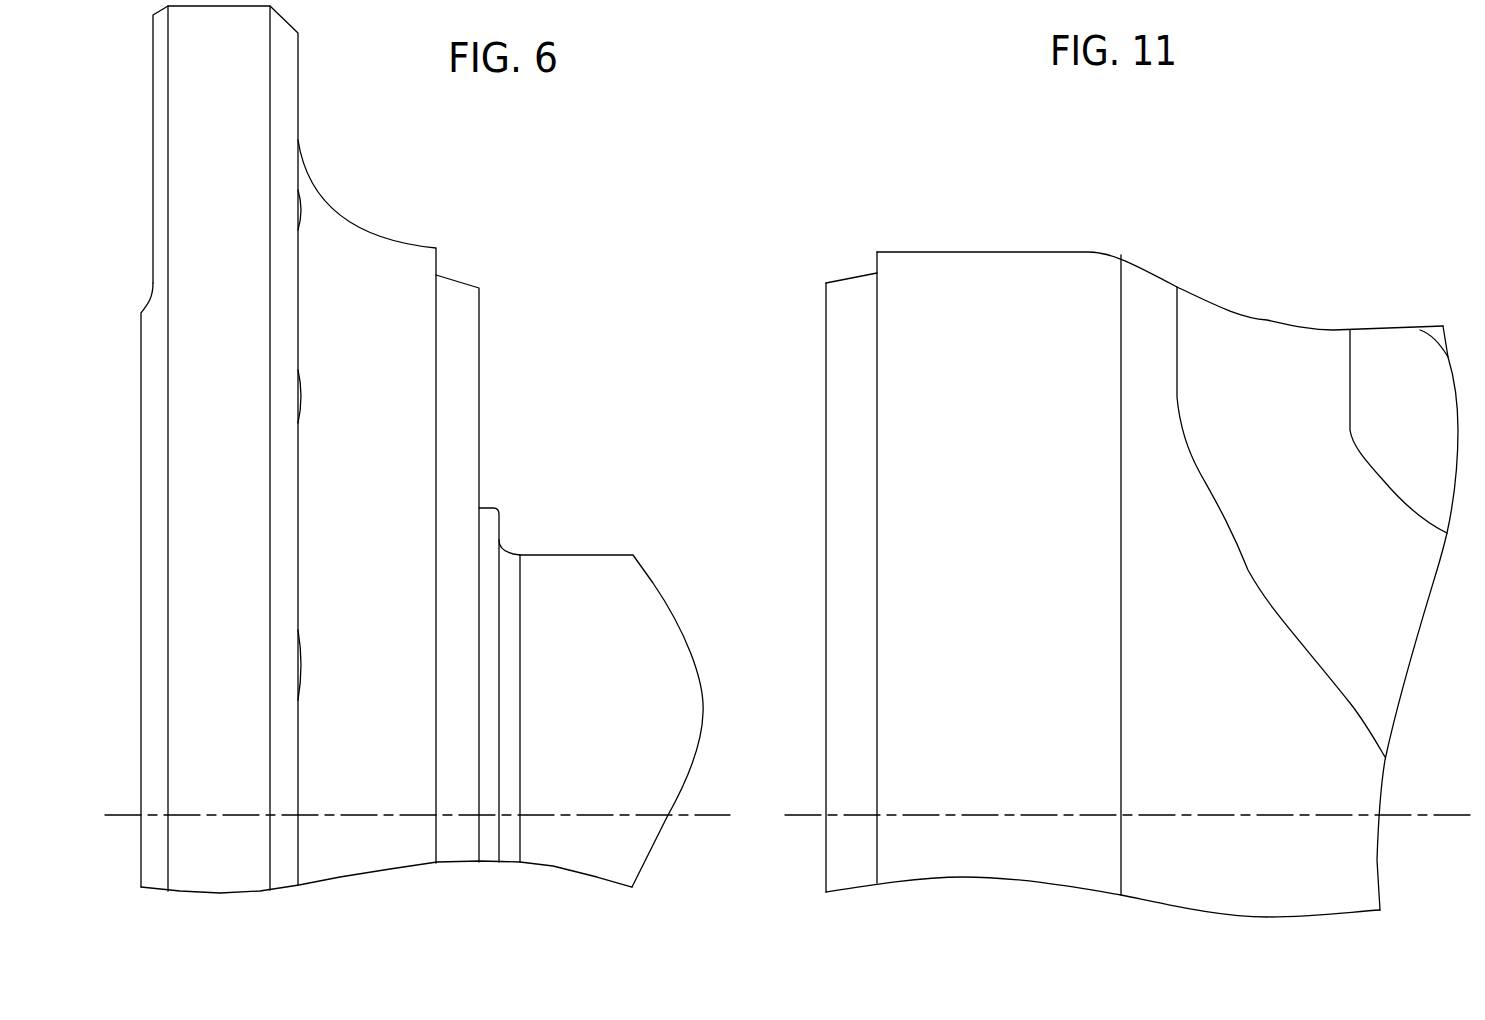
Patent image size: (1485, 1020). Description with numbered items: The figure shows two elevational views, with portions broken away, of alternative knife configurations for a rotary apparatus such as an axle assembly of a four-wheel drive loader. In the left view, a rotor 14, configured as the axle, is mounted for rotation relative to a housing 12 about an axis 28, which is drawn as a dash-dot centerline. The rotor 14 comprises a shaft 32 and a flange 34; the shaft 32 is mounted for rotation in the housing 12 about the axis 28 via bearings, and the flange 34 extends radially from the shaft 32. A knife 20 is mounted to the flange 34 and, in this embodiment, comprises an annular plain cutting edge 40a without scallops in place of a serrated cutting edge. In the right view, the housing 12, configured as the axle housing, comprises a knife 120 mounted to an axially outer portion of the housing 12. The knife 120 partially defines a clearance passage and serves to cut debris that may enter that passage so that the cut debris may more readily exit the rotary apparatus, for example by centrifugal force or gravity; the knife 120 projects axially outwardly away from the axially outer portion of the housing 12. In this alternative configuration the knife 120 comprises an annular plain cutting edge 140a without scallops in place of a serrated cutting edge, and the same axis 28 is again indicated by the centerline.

In FIG. 11, the housing 12 is at (1107, 188).
In FIG. 6, the rotor 14 is at (617, 208).
In FIG. 6, the knife 20 is at (458, 396).
In FIG. 6, the axis 28 is at (553, 815).
In FIG. 11, the axis 28 is at (948, 815).
In FIG. 6, the shaft 32 is at (580, 573).
In FIG. 6, the flange 34 is at (248, 32).
In FIG. 6, the plain cutting edge 40a is at (480, 355).
In FIG. 11, the knife 120 is at (843, 375).
In FIG. 11, the plain cutting edge 140a is at (826, 402).